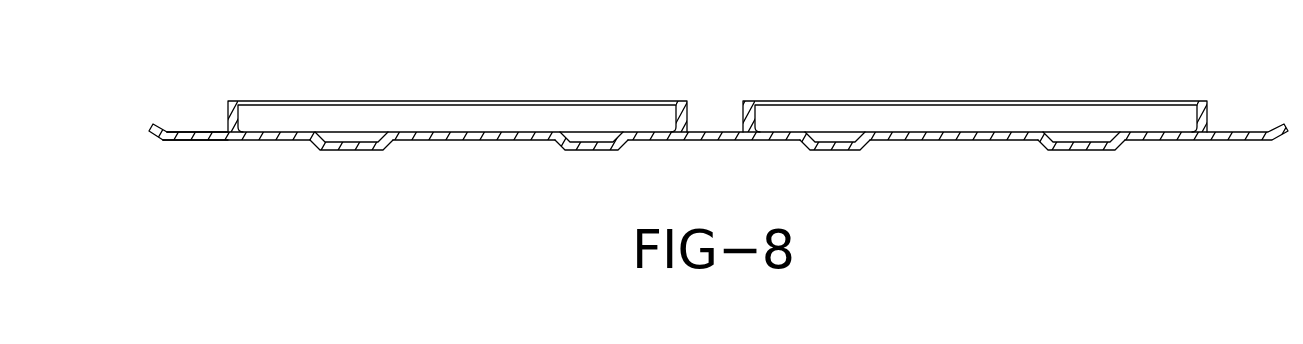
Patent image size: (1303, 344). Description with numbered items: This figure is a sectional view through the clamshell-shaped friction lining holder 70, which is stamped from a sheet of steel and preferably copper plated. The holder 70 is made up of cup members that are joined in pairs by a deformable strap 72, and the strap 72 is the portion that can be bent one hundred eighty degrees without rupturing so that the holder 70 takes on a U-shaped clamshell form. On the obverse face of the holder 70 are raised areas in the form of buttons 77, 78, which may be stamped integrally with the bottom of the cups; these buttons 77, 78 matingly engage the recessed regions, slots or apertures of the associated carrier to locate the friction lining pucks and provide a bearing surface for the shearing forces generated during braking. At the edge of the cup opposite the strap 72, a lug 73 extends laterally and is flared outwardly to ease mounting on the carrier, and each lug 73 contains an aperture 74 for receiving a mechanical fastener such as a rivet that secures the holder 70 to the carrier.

The holder 70 is at (320, 75).
The deformable strap 72 is at (711, 136).
The lug 73 is at (164, 129).
The aperture 74 is at (191, 134).
The button 77 is at (603, 147).
The button 78 is at (343, 143).